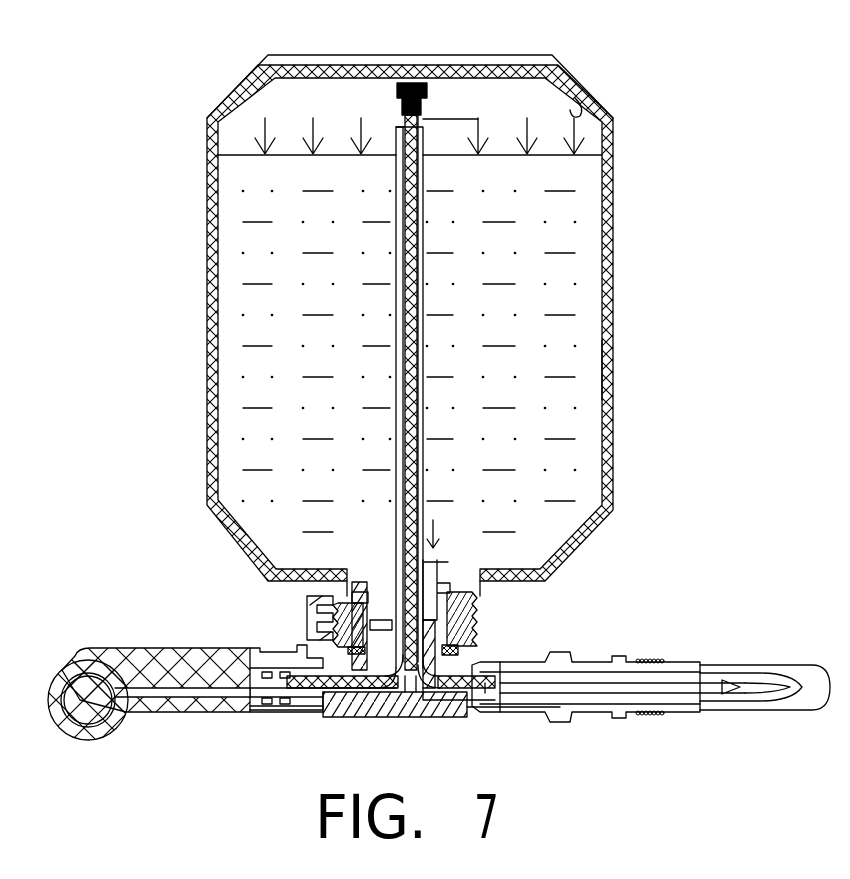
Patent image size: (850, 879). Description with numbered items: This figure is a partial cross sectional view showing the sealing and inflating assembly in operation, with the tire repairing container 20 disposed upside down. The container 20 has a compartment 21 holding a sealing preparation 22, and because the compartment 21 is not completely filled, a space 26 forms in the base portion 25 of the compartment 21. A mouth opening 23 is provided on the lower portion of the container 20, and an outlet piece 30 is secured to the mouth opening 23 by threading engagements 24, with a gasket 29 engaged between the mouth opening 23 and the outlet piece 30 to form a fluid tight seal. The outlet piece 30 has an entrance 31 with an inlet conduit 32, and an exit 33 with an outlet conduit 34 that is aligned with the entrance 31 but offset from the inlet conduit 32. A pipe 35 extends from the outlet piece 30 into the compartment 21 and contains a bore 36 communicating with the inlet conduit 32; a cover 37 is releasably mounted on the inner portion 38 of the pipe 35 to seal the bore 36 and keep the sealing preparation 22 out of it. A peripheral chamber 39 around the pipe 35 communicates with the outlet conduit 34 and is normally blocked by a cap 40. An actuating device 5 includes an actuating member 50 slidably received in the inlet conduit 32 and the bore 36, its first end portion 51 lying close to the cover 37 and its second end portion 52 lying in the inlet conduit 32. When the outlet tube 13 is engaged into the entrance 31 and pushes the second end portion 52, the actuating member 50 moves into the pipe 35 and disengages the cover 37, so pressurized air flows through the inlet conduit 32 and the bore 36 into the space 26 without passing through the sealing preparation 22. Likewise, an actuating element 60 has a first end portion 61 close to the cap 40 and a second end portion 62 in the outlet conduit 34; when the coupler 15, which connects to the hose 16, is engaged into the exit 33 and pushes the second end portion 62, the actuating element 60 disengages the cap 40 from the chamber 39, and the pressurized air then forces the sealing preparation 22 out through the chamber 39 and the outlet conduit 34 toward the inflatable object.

The actuating device 5 is at (405, 382).
The outlet tube 13 is at (103, 660).
The coupler 15 is at (600, 700).
The hose 16 is at (752, 705).
The tire repairing container 20 is at (608, 313).
The compartment 21 is at (606, 358).
The sealing preparation 22 is at (583, 263).
The mouth opening 23 is at (362, 602).
The threading engagements 24 is at (486, 604).
The base portion 25 is at (578, 85).
The space 26 is at (580, 108).
The gasket 29 is at (345, 682).
The outlet piece 30 is at (360, 644).
The entrance 31 is at (230, 660).
The inlet conduit 32 is at (410, 694).
The exit 33 is at (550, 660).
The outlet conduit 34 is at (432, 694).
The pipe 35 is at (397, 307).
The bore 36 is at (405, 238).
The cover 37 is at (413, 85).
The inner portion 38 is at (398, 140).
The chamber 39 is at (378, 692).
The cap 40 is at (366, 618).
The actuating member 50 is at (405, 440).
The first end portion 51 is at (406, 128).
The second end portion 52 is at (293, 682).
The actuating element 60 is at (470, 668).
The first end portion 61 is at (470, 640).
The second end portion 62 is at (496, 692).